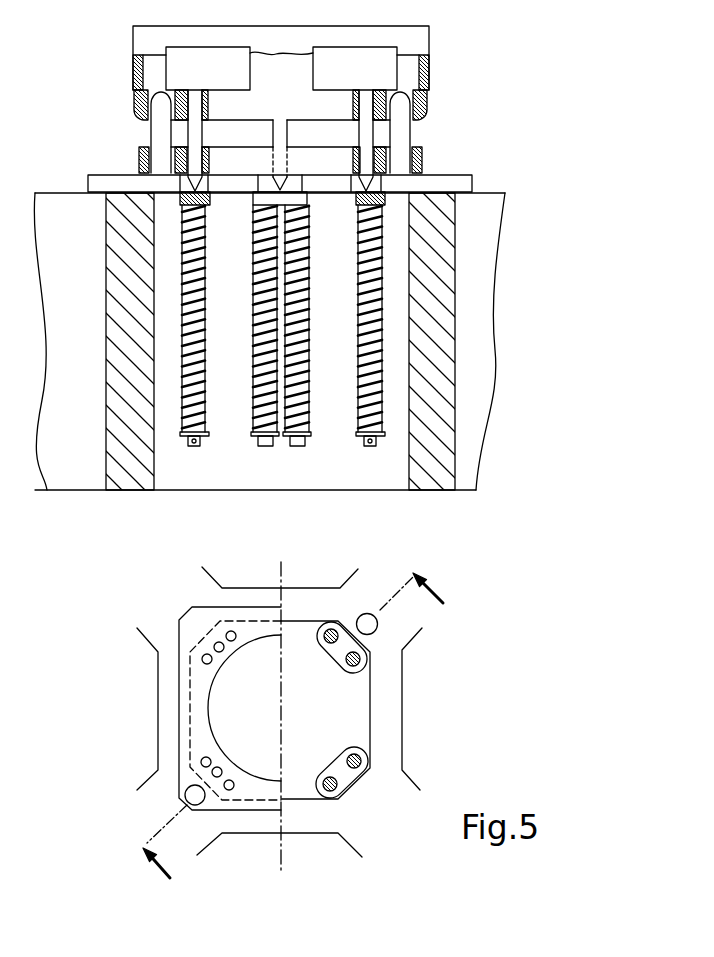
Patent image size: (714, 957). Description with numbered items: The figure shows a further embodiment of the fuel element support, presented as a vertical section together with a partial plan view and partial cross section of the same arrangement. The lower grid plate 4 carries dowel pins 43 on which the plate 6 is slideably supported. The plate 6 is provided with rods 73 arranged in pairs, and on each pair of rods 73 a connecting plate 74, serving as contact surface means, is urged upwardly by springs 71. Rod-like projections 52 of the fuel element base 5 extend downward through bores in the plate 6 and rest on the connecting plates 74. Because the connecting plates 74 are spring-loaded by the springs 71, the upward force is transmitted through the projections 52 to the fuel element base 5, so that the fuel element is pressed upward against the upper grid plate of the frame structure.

In FIG. 5a, the lower grid plate 4 is at (465, 453).
In FIG. 5a, the fuel element base 5 is at (417, 40).
In FIG. 5a, the plate 6 is at (422, 162).
In FIG. 5a, the dowel pins 43 is at (160, 124).
In FIG. 5, the dowel pins 43 is at (188, 792).
In FIG. 5a, the rod-like projections 52 is at (192, 137).
In FIG. 5, the rod-like projections 52 is at (224, 650).
In FIG. 5a, the springs 71 is at (260, 232).
In FIG. 5a, the rods 73 is at (258, 335).
In FIG. 5a, the connecting plate 74 is at (352, 200).
In FIG. 5, the connecting plate 74 is at (338, 767).